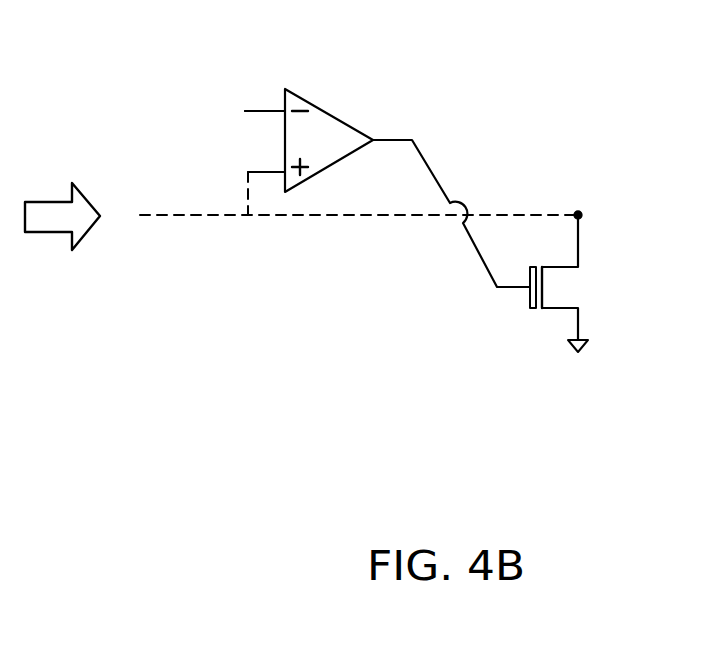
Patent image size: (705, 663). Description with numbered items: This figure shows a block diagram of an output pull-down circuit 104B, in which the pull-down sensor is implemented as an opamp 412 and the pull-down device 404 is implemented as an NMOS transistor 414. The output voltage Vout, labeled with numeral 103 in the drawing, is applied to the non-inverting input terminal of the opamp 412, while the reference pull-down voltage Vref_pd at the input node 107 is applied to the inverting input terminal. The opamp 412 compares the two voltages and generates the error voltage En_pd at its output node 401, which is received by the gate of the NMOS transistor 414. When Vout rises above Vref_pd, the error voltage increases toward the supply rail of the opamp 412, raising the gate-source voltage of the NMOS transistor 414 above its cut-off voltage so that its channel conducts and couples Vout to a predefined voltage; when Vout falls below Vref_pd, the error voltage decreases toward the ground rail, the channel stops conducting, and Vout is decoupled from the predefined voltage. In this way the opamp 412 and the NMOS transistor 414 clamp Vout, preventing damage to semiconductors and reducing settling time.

The output pull-down circuit 104B is at (102, 107).
The pull-down device 404 is at (54, 231).
The opamp 412 is at (330, 118).
The NMOS transistor 414 is at (577, 285).
The input node 107 is at (224, 117).
The output voltage Vout 103 is at (358, 209).
The output node 401 is at (443, 215).